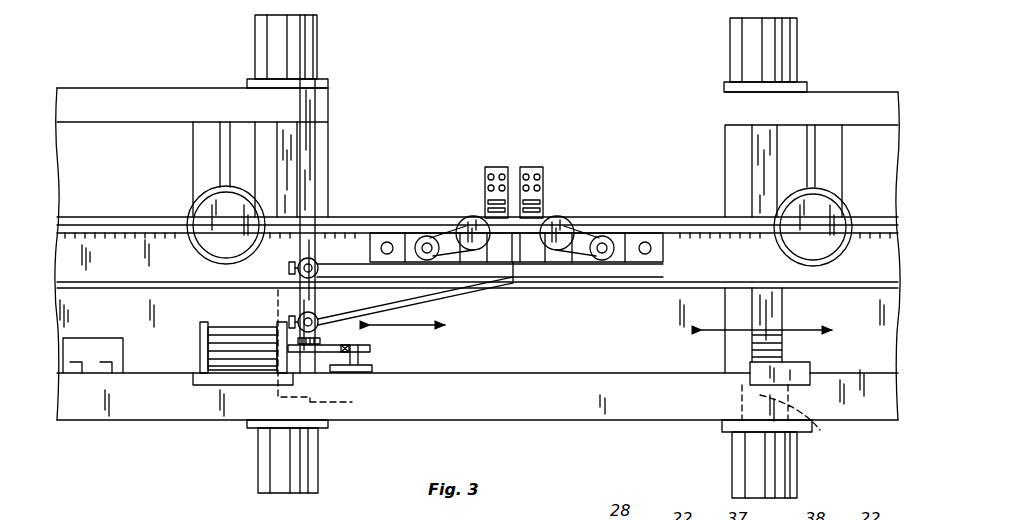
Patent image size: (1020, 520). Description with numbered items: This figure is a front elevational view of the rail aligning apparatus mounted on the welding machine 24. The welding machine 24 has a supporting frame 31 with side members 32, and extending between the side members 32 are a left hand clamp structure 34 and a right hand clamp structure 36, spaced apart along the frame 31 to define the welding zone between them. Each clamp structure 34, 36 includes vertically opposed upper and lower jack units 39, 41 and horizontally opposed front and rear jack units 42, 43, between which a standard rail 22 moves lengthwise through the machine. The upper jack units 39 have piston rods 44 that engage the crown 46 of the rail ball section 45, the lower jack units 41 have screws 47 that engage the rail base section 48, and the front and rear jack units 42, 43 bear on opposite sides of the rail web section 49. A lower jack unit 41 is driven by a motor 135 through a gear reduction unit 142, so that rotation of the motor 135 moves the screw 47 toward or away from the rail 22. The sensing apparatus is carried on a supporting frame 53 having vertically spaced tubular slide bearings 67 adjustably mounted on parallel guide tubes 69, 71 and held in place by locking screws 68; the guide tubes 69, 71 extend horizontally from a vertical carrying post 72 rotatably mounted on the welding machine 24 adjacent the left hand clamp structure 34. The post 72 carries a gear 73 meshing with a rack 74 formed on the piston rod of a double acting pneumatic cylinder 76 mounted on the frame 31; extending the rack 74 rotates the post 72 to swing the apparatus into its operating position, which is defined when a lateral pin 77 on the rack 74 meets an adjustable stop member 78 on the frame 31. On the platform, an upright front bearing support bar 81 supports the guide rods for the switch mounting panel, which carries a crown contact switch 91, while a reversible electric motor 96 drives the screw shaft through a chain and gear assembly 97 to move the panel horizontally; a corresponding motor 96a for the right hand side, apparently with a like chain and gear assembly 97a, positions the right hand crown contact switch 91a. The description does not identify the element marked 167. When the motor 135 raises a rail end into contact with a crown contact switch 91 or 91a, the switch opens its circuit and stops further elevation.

The standard rail 22 is at (878, 252).
The welding machine 24 is at (604, 195).
The supporting frame 31 is at (116, 400).
The side members 32 is at (680, 412).
The left hand clamp structure 34 is at (332, 55).
The right hand clamp structure 36 is at (723, 74).
The upper jack unit 39 is at (262, 50).
The lower jack unit 41 is at (275, 462).
The front horizontal jack unit 42 is at (214, 219).
The rear horizontal jack unit 43 is at (828, 215).
The piston rod 44 is at (285, 165).
The rail ball section 45 is at (650, 212).
The crown 46 is at (345, 217).
The screw 47 is at (757, 345).
The rail base section 48 is at (740, 288).
The rail web section 49 is at (100, 215).
The supporting frame of the aligning apparatus 53 is at (485, 298).
The tubular slide bearing 67 is at (320, 325).
The locking screw 68 is at (289, 318).
The guide tube 69 is at (316, 278).
The guide tube 71 is at (436, 328).
The carrying post 72 is at (315, 109).
The gear 73 is at (302, 355).
The rack 74 is at (370, 349).
The double acting pneumatic cylinder 76 is at (245, 357).
The abutment pin 77 is at (347, 363).
The adjustable stop member 78 is at (360, 357).
The front bearing support bar 81 is at (660, 244).
The crown contact switch 91 is at (498, 167).
The crown contact switch 91a is at (532, 167).
The reversible electric motor 96 is at (467, 216).
The horizontal adjustment motor 96a is at (562, 218).
The chain and gear assembly 97 is at (442, 224).
The roller arm 97a is at (597, 228).
The left hand motor 135 is at (305, 478).
The gear reduction unit 142 is at (573, 367).
The upper roller 167 is at (314, 262).